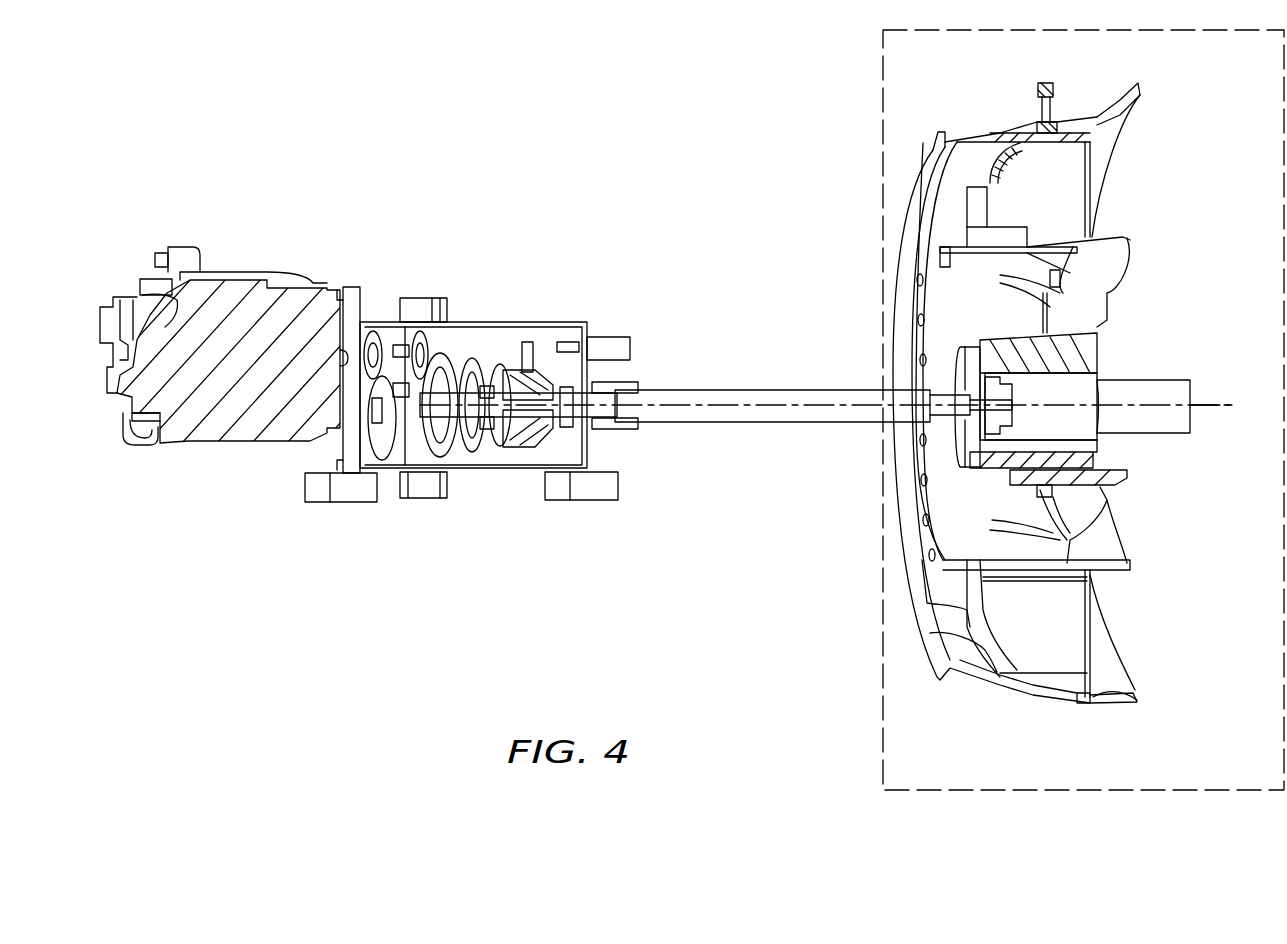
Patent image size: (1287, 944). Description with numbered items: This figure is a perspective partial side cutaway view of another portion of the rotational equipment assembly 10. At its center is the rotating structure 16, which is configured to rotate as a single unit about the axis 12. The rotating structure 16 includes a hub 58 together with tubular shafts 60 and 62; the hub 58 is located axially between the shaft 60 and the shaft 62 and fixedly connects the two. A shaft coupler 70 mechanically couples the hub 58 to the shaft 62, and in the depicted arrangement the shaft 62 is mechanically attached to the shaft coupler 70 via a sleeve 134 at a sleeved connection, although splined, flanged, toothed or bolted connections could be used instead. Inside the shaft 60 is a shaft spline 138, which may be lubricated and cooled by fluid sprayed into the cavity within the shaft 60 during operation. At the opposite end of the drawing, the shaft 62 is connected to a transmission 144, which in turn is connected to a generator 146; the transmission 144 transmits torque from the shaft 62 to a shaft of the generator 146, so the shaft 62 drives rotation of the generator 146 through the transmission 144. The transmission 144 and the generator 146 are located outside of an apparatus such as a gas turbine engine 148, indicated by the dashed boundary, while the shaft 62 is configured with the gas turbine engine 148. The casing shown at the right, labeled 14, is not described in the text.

The rotational equipment assembly 10 is at (190, 145).
The axis 12 is at (1220, 420).
The gas turbine engine casing 14 is at (1095, 108).
The rotating structure 16 is at (846, 434).
The hub 58 is at (957, 358).
The shaft 60 is at (1157, 366).
The shaft 62 is at (763, 388).
The shaft coupler 70 is at (957, 468).
The sleeve 134 is at (960, 465).
The shaft spline 138 is at (1115, 432).
The transmission 144 is at (497, 320).
The generator 146 is at (268, 270).
The gas turbine engine 148 is at (883, 757).